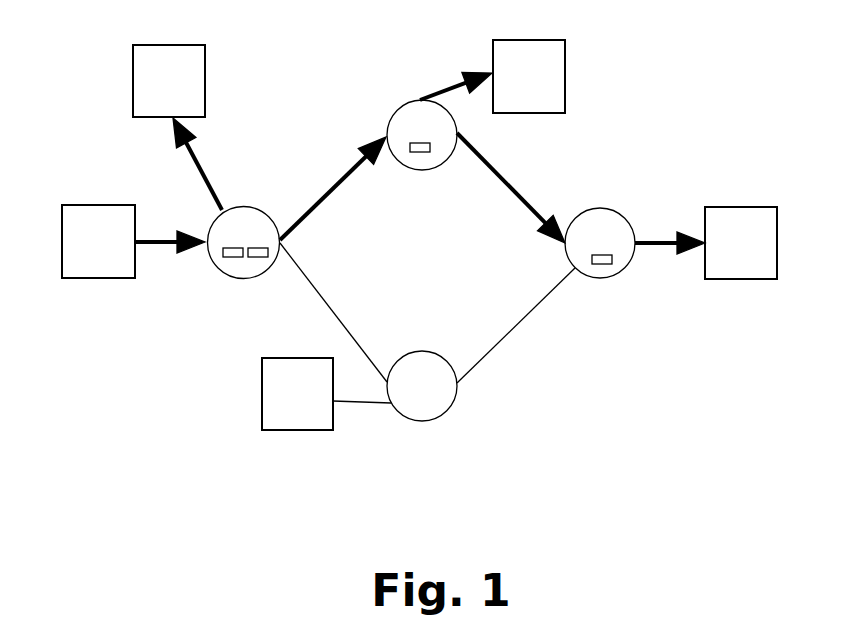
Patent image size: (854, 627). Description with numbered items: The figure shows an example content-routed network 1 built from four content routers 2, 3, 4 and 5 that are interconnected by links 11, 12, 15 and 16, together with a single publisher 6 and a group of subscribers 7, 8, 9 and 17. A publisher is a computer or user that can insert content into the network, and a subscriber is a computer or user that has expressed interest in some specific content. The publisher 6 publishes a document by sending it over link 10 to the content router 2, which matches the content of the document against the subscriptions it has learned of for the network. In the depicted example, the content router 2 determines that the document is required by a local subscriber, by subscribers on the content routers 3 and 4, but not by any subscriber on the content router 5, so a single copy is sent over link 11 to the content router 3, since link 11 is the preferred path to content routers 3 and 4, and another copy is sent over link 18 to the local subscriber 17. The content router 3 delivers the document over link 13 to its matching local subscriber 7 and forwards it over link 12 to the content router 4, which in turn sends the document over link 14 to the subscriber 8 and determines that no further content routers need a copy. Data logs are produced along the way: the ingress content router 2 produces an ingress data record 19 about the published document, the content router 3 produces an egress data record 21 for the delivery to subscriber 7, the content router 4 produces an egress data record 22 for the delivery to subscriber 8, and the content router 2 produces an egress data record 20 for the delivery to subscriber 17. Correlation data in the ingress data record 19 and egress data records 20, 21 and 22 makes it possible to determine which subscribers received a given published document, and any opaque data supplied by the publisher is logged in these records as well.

The content-routed network 1 is at (649, 422).
The content router 2 is at (245, 207).
The content router 3 is at (398, 109).
The content router 4 is at (596, 208).
The content router 5 is at (447, 411).
The publisher 6 is at (107, 205).
The subscriber 7 is at (565, 89).
The subscriber 8 is at (740, 279).
The subscriber 9 is at (262, 378).
The link 10 is at (153, 247).
The link 11 is at (331, 193).
The link 12 is at (490, 168).
The link 13 is at (448, 89).
The link 14 is at (657, 246).
The link 15 is at (321, 296).
The link 16 is at (527, 314).
The subscriber 17 is at (133, 67).
The link 18 is at (208, 190).
The ingress data record 19 is at (231, 258).
The egress data record 20 is at (258, 258).
The egress data record 21 is at (423, 154).
The egress data record 22 is at (602, 265).